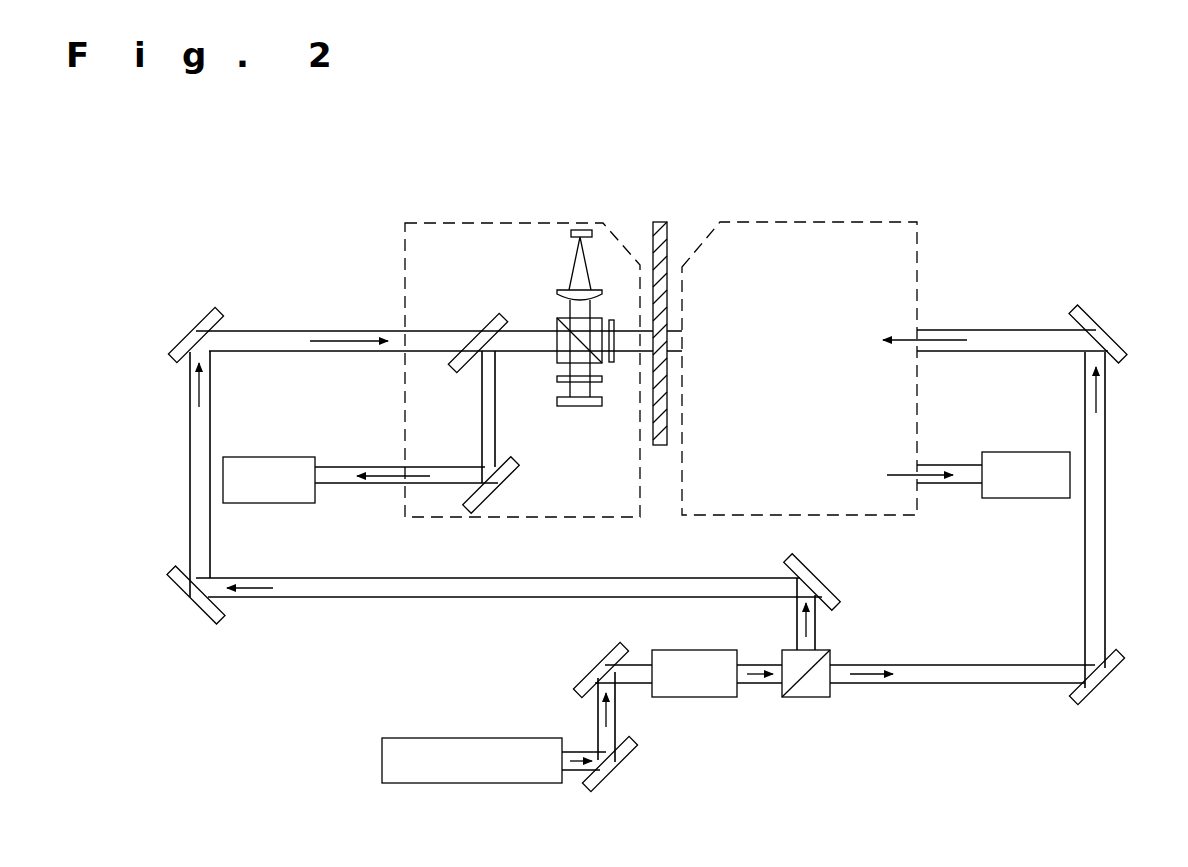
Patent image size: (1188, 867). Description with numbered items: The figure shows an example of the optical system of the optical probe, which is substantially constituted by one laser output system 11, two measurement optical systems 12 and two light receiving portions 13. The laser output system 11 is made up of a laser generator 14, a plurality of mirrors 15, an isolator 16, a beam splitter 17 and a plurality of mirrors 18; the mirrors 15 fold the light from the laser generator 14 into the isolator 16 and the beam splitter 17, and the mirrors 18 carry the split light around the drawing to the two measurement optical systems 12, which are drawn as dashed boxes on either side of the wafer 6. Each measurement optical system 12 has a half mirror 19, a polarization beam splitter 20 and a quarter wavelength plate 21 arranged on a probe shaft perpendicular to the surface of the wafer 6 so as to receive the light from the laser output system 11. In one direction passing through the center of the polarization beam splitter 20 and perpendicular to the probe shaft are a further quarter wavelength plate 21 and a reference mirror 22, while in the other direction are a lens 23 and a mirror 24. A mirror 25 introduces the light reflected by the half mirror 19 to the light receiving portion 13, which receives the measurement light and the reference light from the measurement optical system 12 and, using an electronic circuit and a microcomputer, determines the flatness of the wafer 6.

The wafer 6 is at (668, 236).
The laser output system 11 is at (930, 762).
The measurement optical system 12 is at (446, 206).
The light receiving portion 13 is at (276, 490).
The laser generator 14 is at (445, 750).
The mirror 15 is at (597, 668).
The isolator 16 is at (694, 705).
The beam splitter 17 is at (806, 700).
The mirror 18 is at (192, 330).
The half mirror 19 is at (497, 320).
The polarization beam splitter 20 is at (565, 322).
The quarter wavelength plate 21 is at (612, 318).
The reference mirror 22 is at (580, 407).
The lens 23 is at (563, 293).
The mirror 24 is at (580, 228).
The mirror 25 is at (500, 485).